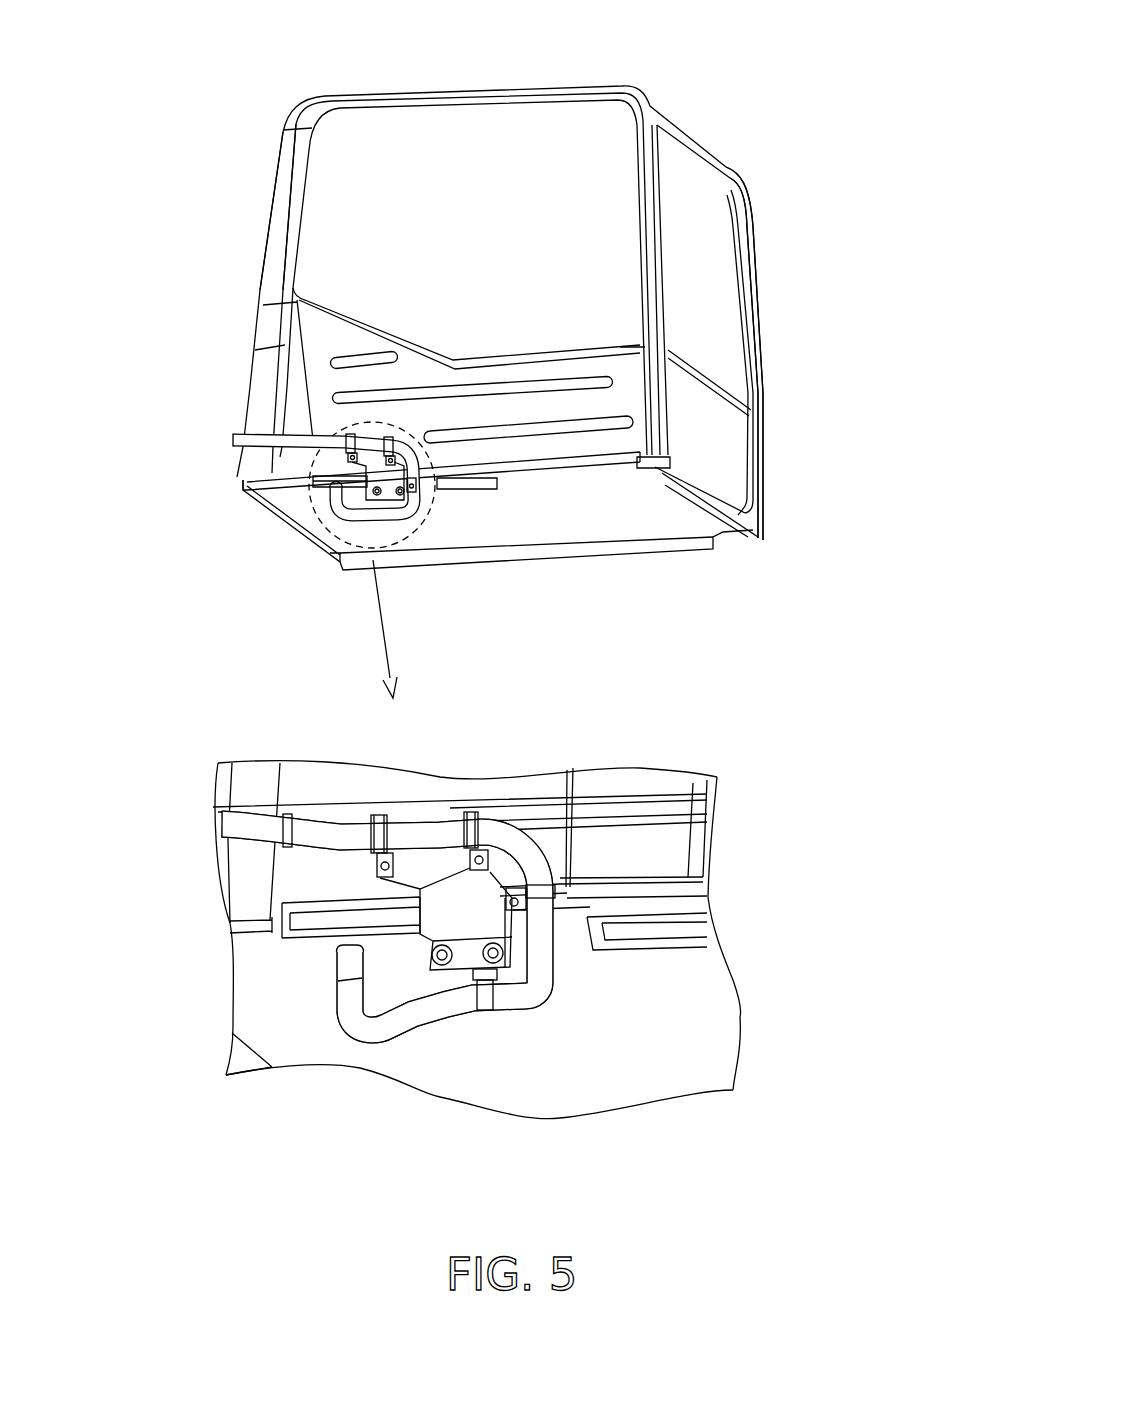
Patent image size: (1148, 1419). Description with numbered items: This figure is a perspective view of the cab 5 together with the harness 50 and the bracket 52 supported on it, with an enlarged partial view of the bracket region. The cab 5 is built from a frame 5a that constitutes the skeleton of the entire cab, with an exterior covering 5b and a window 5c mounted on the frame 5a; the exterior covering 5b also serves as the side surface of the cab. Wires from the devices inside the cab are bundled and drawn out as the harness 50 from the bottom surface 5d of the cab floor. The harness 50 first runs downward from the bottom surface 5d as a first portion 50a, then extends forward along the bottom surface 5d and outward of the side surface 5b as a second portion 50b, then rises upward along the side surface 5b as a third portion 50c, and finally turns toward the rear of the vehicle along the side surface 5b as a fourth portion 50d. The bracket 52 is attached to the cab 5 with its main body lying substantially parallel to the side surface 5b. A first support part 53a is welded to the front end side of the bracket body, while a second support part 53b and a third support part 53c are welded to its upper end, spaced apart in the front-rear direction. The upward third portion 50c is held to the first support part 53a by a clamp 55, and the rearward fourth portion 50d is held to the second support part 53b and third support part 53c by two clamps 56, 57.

The cab 5 is at (683, 113).
The frame 5a is at (596, 480).
The exterior covering 5b is at (331, 418).
The window 5c is at (567, 207).
The bottom surface 5d is at (562, 527).
The harness 50 is at (268, 446).
The first portion 50a is at (345, 963).
The second portion 50b is at (432, 1017).
The third portion 50c is at (588, 898).
The fourth portion 50d is at (307, 822).
The bracket 52 is at (362, 490).
The first support part 53a is at (525, 878).
The second support part 53b is at (517, 890).
The third support part 53c is at (376, 863).
The clamp 55 is at (563, 900).
The clamp 56 is at (468, 820).
The clamp 57 is at (378, 825).